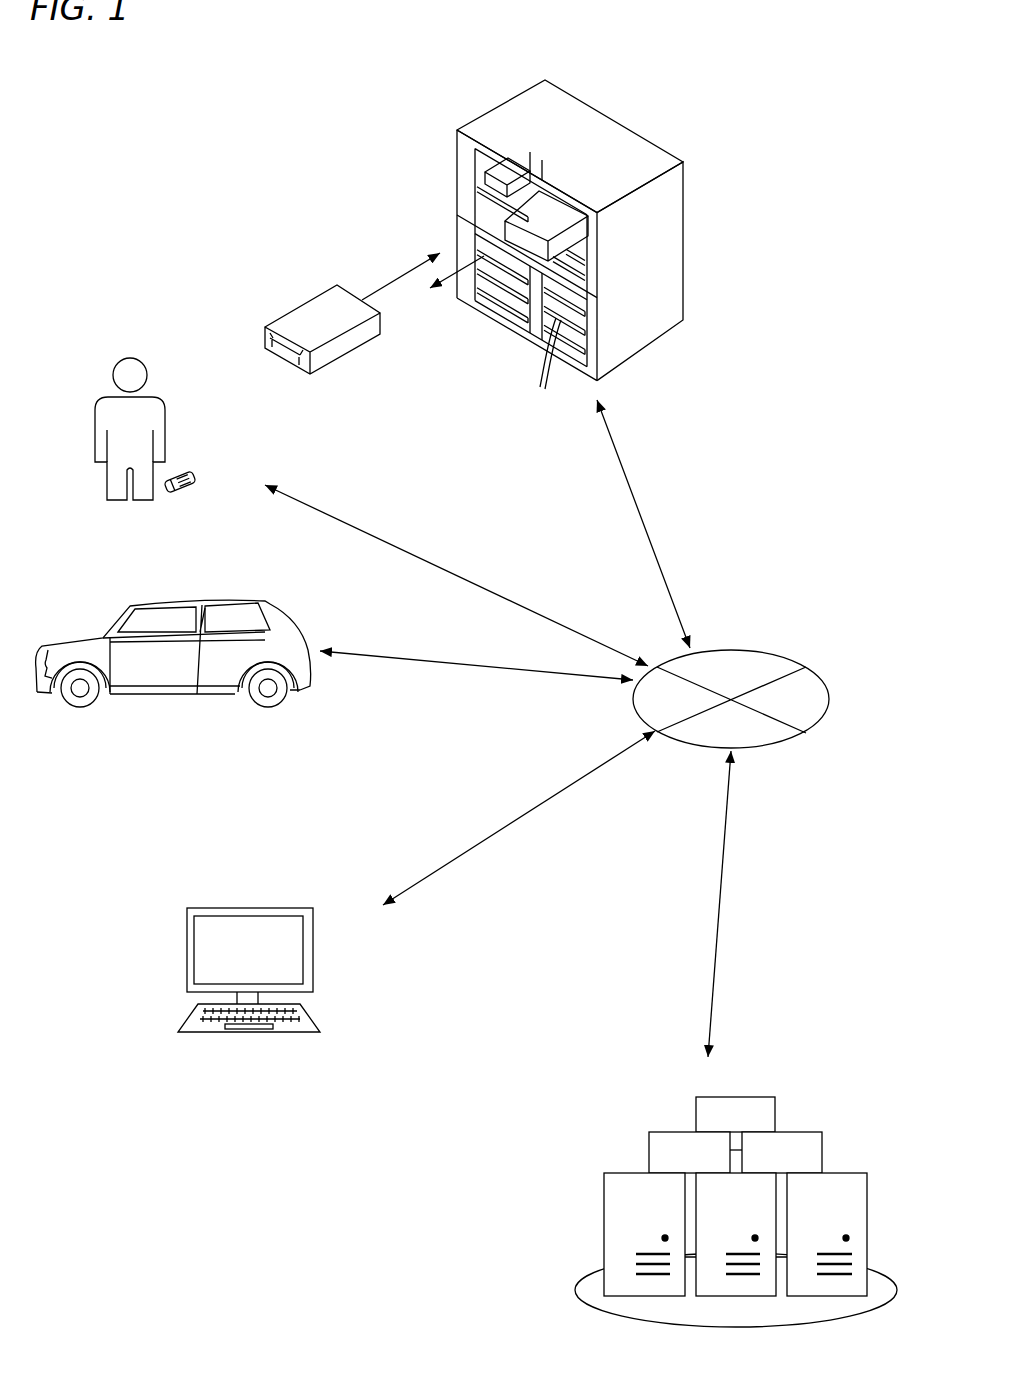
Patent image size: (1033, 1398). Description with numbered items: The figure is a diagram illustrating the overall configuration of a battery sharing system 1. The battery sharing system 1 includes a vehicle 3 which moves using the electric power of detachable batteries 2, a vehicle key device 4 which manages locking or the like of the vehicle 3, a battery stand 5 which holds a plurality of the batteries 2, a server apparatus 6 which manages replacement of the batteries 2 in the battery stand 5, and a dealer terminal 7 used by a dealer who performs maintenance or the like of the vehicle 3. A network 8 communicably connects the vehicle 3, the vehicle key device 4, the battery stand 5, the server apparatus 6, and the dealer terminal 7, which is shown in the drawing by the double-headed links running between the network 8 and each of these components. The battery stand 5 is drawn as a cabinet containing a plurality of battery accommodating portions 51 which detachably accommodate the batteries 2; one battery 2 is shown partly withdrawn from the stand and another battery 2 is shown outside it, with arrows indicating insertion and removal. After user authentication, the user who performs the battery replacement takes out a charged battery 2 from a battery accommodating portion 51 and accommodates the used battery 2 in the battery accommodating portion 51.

The battery sharing system 1 is at (806, 226).
The batteries 2 is at (548, 205).
The vehicle 3 is at (95, 633).
The vehicle key device 4 is at (193, 491).
The battery stand 5 is at (574, 110).
The battery accommodating portion 51 is at (526, 370).
The server apparatus 6 is at (815, 1130).
The dealer terminal 7 is at (287, 905).
The network 8 is at (752, 650).